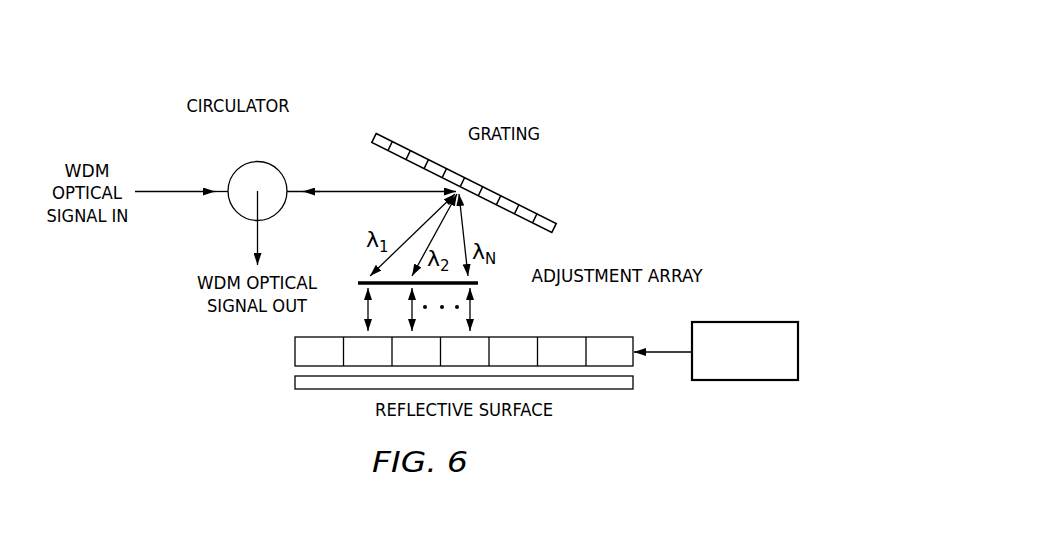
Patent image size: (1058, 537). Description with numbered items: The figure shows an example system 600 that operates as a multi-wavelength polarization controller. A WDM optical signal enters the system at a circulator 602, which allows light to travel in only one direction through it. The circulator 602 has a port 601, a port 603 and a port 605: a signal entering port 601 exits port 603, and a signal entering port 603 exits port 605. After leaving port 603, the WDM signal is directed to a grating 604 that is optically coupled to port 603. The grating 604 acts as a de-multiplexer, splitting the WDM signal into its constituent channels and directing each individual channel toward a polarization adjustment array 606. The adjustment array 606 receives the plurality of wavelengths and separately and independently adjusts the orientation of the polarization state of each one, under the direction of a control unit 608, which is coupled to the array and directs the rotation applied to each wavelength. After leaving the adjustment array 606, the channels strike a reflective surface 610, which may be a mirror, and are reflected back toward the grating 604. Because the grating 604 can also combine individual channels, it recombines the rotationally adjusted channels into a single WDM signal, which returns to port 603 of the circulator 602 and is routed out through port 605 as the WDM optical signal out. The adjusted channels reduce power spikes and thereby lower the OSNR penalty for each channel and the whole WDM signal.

The system 600 is at (610, 98).
The port 601 is at (228, 190).
The circulator 602 is at (257, 162).
The port 603 is at (287, 190).
The grating 604 is at (488, 189).
The port 605 is at (253, 222).
The polarization adjustment array 606 is at (605, 337).
The control unit 608 is at (747, 381).
The reflective surface 610 is at (295, 382).